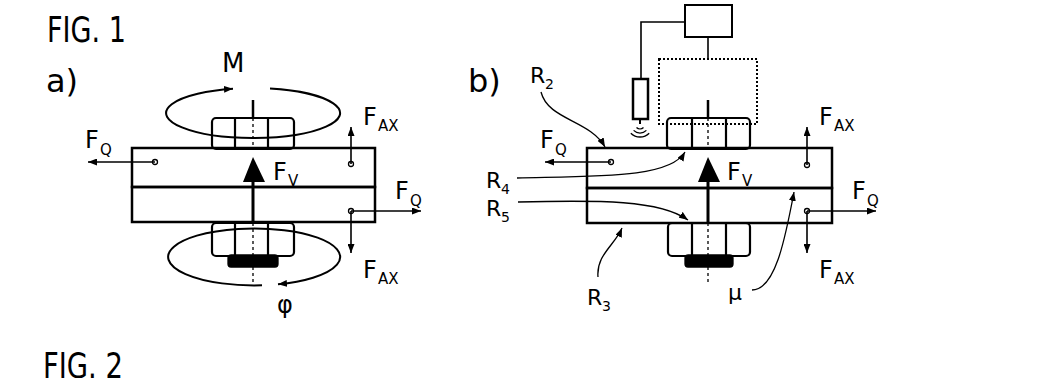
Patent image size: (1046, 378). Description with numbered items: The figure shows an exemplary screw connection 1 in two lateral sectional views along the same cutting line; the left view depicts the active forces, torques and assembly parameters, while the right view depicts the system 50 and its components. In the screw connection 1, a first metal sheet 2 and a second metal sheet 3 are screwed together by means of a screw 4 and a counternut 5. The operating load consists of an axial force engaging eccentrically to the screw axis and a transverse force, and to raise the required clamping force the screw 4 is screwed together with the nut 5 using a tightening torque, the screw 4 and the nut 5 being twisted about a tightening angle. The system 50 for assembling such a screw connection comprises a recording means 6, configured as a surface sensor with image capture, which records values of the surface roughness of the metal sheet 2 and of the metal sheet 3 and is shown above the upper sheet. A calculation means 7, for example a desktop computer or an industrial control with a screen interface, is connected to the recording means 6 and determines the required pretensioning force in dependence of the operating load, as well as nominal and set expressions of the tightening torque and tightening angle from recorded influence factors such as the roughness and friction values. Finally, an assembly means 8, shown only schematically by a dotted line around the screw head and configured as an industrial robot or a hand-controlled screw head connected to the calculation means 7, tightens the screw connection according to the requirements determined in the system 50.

The screw connection 1 is at (147, 93).
The first metal sheet 2 is at (363, 172).
The second metal sheet 3 is at (143, 205).
The screw 4 is at (282, 130).
The counternut 5 is at (212, 230).
The recording means 6 is at (633, 92).
The calculation means 7 is at (718, 23).
The assembly means 8 is at (743, 71).
The system 50 is at (794, 326).